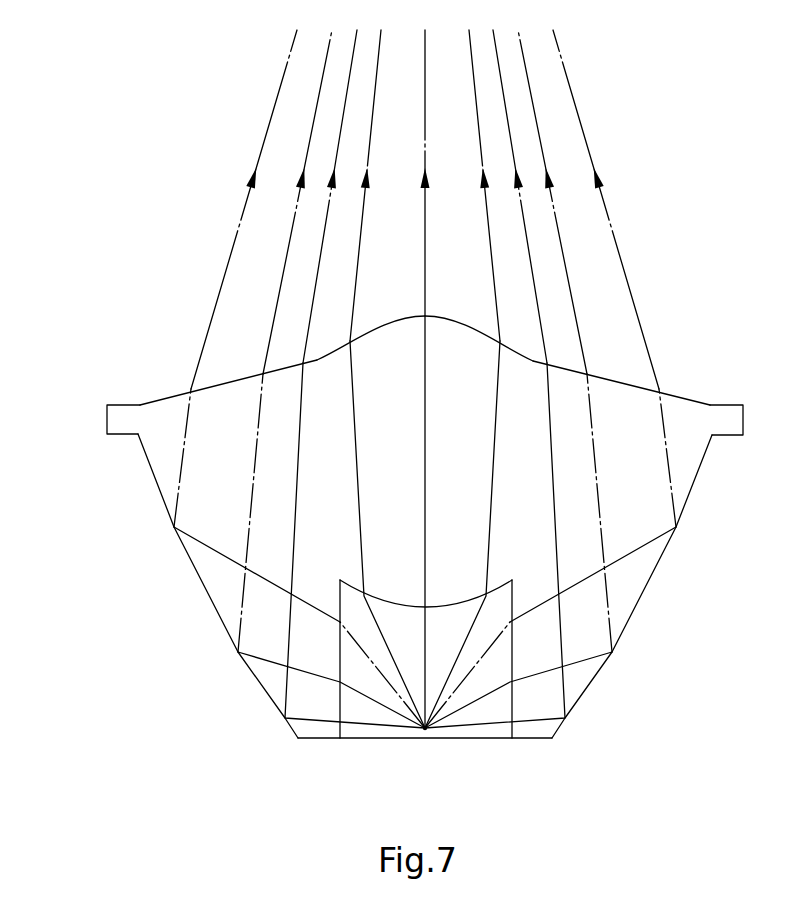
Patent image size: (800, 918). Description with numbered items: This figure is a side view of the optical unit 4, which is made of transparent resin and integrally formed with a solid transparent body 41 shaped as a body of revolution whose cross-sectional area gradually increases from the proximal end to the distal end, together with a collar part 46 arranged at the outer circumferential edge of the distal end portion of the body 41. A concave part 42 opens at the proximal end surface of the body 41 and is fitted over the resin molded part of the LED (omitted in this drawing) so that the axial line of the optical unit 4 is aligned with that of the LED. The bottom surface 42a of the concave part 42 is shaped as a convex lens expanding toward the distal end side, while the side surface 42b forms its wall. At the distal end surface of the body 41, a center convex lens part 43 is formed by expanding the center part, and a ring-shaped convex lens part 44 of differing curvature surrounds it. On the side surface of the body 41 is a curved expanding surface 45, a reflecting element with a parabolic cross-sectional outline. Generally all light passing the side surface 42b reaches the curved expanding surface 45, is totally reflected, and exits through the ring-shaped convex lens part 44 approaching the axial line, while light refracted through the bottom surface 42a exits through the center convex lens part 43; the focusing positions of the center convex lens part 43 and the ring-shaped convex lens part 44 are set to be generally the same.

The optical unit 4 is at (407, 311).
The solid transparent body 41 is at (437, 586).
The concave part 42 is at (347, 650).
The bottom surface of the concave part 42a is at (340, 622).
The side surface of the concave part 42b is at (512, 707).
The center convex lens part 43 is at (398, 318).
The ring-shaped convex lens part 44 is at (238, 380).
The curved expanding surface 45 is at (206, 590).
The collar part 46 is at (112, 396).